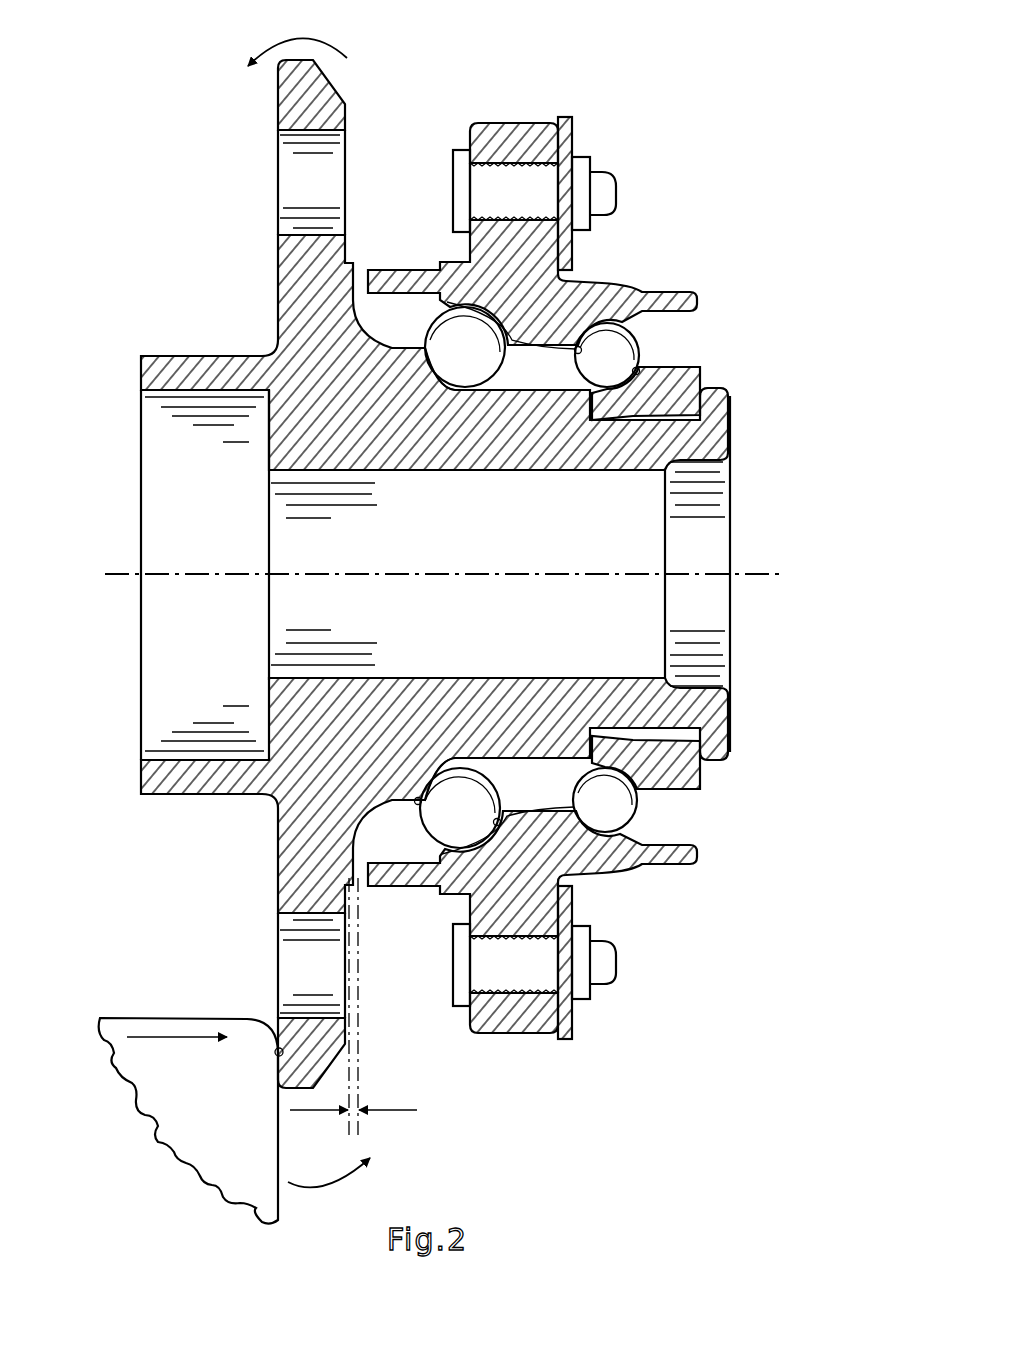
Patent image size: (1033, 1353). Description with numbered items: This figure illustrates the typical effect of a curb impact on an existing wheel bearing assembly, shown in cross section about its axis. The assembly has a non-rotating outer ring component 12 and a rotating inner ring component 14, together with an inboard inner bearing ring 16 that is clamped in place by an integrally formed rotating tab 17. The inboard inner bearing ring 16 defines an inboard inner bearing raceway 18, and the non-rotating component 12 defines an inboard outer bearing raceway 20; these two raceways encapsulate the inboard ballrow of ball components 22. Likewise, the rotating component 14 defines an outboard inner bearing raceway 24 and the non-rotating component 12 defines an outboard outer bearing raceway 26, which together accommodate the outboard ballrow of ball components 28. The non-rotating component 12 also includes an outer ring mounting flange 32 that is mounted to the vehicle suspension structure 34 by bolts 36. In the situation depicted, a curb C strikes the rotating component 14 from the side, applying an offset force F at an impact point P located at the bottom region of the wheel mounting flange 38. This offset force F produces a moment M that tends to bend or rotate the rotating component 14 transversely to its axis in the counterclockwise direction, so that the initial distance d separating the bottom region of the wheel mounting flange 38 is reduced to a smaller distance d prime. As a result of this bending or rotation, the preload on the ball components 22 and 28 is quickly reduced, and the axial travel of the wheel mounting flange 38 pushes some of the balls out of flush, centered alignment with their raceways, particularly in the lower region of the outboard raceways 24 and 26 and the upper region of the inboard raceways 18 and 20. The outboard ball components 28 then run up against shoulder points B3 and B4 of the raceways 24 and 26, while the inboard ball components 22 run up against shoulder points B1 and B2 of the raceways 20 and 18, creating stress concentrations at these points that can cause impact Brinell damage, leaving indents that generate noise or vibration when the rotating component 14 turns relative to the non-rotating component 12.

The non-rotating outer ring component 12 is at (513, 112).
The rotating inner ring component 14 is at (300, 330).
The inboard inner bearing ring 16 is at (700, 378).
The integrally formed rotating tab 17 is at (727, 405).
The inboard inner bearing raceway 18 is at (603, 422).
The inboard outer bearing raceway 20 is at (592, 290).
The inboard ballrow ball components 22 is at (617, 353).
The outboard inner bearing raceway 24 is at (440, 392).
The outboard outer bearing raceway 26 is at (480, 302).
The outboard ballrow ball components 28 is at (467, 350).
The outer ring mounting flange 32 is at (540, 140).
The vehicle suspension structure 34 is at (565, 128).
The bolts 36 is at (553, 197).
The wheel mounting flange 38 is at (283, 1053).
The shoulder point of inboard outer bearing raceway B1 is at (582, 348).
The shoulder point of inboard inner bearing raceway B2 is at (639, 371).
The shoulder point of outboard inner bearing raceway B3 is at (417, 798).
The shoulder point of outboard outer bearing raceway B4 is at (497, 826).
The curb C is at (218, 1155).
The offset force F is at (177, 1050).
The impact point P is at (276, 1052).
The distance d is at (353, 1136).
The moment M is at (309, 608).